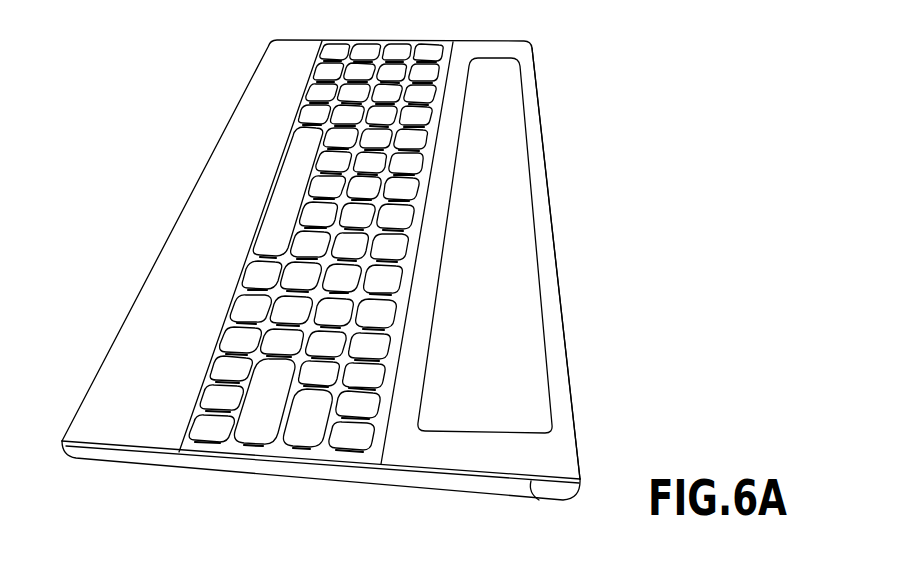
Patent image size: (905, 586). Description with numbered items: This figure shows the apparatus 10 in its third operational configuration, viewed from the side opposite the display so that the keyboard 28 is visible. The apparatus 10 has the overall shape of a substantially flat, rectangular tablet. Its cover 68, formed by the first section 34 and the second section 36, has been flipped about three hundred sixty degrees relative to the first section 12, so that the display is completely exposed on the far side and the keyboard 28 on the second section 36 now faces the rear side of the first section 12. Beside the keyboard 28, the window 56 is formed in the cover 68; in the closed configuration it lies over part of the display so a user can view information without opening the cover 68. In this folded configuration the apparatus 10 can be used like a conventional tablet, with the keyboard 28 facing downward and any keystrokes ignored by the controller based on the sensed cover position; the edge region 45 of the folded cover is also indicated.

The apparatus 10 is at (586, 106).
The first section 12 is at (107, 453).
The keyboard 28 is at (253, 437).
The first section of the cover 34 is at (527, 460).
The second section of the cover 36 is at (280, 452).
The side edge 45 is at (576, 440).
The window 56 is at (537, 357).
The cover 68 is at (283, 187).